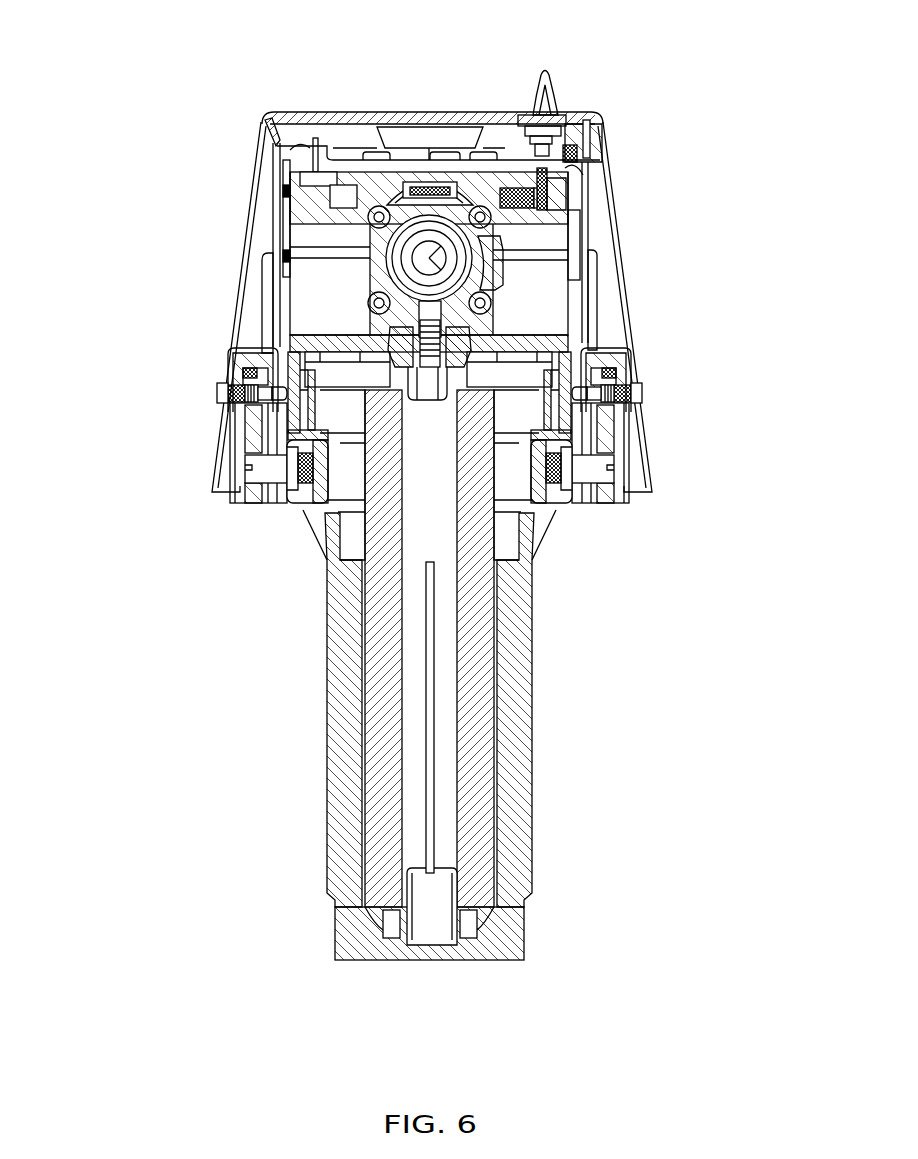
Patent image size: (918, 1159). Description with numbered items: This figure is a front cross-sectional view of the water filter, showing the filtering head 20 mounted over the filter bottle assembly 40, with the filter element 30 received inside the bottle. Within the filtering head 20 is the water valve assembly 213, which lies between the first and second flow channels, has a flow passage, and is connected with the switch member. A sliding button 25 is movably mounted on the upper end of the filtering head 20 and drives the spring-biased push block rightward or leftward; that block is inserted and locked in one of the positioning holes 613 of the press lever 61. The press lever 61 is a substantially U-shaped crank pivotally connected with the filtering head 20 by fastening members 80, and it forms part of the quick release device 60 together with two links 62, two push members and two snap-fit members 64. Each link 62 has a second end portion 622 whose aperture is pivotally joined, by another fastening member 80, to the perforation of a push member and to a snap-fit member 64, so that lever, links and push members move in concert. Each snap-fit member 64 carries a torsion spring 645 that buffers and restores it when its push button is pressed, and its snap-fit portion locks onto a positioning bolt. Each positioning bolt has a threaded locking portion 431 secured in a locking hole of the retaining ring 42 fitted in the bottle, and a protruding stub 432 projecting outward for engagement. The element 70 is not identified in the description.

The top cover 70 is at (405, 110).
The sliding button 25 is at (547, 122).
The quick release device 60 is at (260, 313).
The links 62 is at (267, 290).
The press lever 61 is at (283, 170).
The positioning holes 613 is at (563, 197).
The filtering head 20 is at (355, 157).
The water valve assembly 213 is at (375, 270).
The second end portion 622 is at (255, 350).
The torsion spring 645 is at (247, 383).
The fastening members 80 is at (222, 393).
The snap-fit members 64 is at (260, 437).
The protruding stub 432 is at (265, 468).
The locking portion 431 is at (287, 473).
The retaining ring 42 is at (303, 490).
The filter element 30 is at (335, 755).
The filter bottle assembly 40 is at (312, 833).